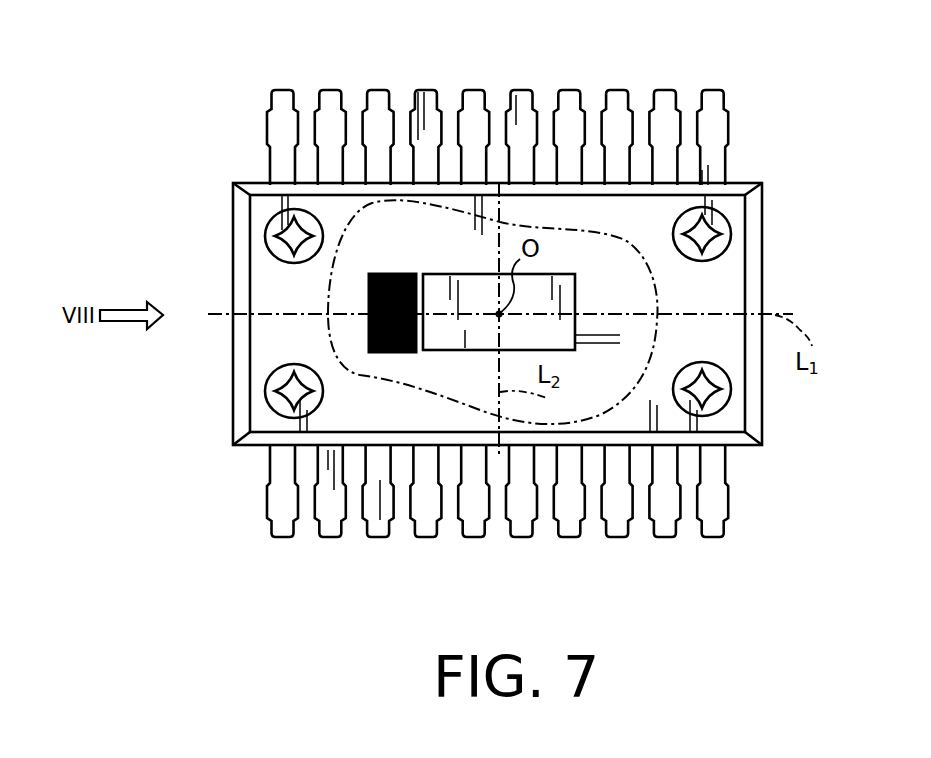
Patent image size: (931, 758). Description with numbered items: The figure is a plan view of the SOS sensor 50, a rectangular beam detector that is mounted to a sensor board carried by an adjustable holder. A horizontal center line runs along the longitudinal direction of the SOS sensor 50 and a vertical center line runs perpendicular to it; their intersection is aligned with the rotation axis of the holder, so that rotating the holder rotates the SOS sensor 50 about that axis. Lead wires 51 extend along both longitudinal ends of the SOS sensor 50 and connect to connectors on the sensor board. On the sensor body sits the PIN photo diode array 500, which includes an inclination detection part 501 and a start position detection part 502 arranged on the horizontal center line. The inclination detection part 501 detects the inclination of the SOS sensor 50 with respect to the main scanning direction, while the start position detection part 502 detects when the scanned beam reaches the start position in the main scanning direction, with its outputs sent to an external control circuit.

The SOS sensor 50 is at (755, 245).
The lead wires 51 is at (250, 72).
The PIN photo diode array 500 is at (353, 305).
The inclination detection part 501 is at (627, 283).
The start position detection part 502 is at (393, 271).